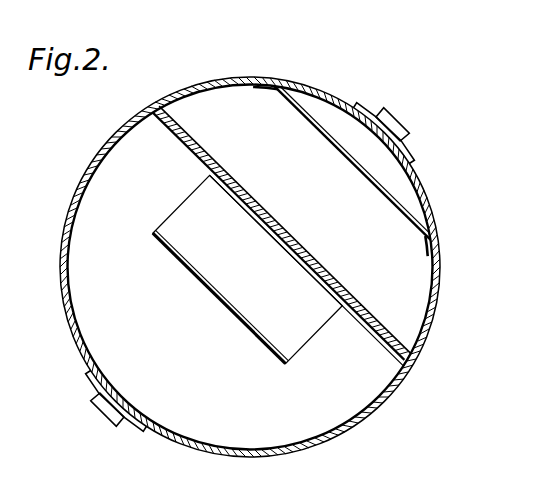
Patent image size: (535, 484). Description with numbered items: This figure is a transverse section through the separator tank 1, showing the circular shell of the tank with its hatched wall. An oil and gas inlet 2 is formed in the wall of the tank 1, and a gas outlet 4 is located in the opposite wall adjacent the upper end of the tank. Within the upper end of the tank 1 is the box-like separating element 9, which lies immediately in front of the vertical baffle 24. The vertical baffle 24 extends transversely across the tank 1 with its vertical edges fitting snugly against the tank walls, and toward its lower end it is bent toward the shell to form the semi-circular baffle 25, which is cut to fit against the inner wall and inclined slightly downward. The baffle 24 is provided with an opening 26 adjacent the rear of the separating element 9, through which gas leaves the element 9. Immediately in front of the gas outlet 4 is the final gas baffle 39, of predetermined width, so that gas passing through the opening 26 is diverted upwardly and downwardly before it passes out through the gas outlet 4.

The separator tank 1 is at (88, 172).
The oil and gas inlet 2 is at (101, 413).
The gas outlet 4 is at (404, 130).
The separating element 9 is at (188, 236).
The vertical baffle 24 is at (378, 328).
The semi-circular baffle 25 is at (400, 268).
The opening 26 is at (336, 286).
The final gas baffle 39 is at (392, 193).